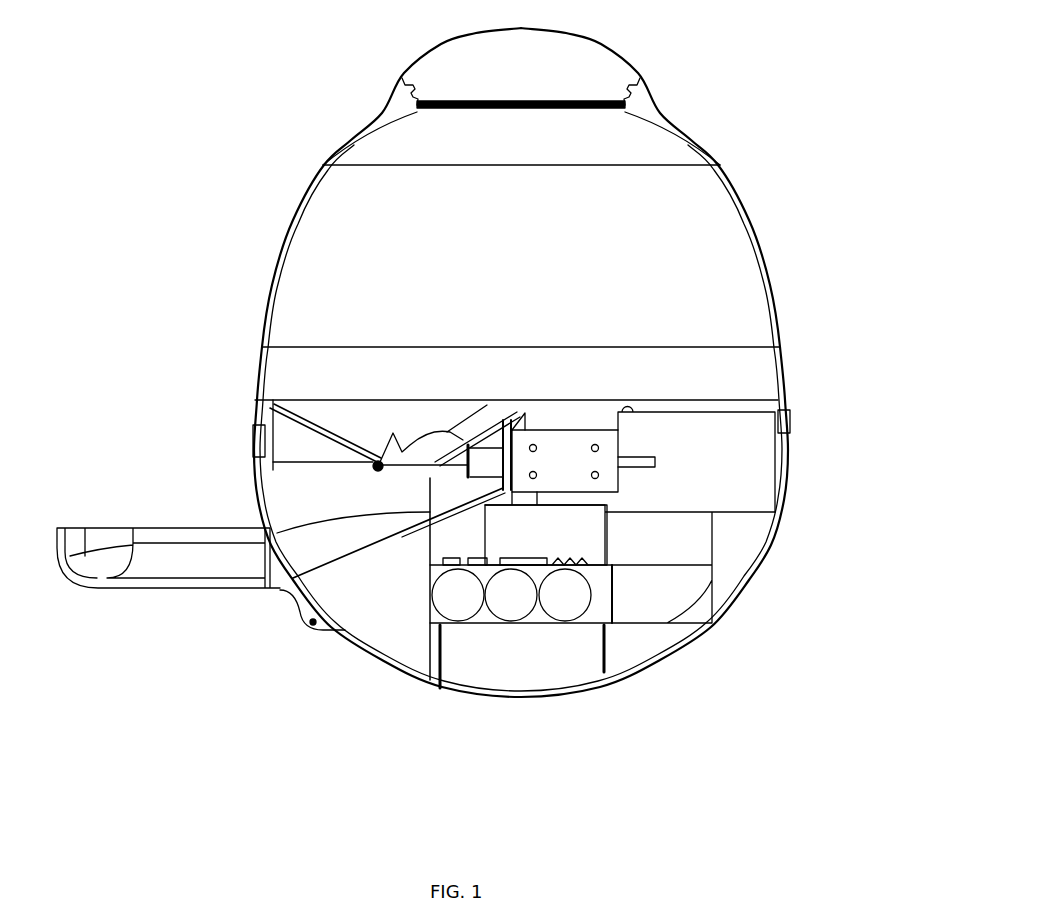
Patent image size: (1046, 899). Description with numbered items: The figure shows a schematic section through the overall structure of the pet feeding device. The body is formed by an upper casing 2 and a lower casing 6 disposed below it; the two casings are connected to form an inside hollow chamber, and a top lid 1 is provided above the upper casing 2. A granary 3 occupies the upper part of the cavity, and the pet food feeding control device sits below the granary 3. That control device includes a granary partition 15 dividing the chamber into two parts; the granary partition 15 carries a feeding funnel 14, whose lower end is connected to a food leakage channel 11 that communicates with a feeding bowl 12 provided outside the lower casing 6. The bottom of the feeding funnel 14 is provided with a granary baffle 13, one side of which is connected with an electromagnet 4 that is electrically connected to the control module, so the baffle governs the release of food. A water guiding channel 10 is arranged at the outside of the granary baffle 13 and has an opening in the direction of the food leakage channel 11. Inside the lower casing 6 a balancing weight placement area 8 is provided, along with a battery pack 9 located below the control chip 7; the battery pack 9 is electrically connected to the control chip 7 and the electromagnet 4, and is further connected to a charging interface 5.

The top lid 1 is at (592, 53).
The upper casing 2 is at (713, 148).
The granary 3 is at (587, 285).
The electromagnet 4 is at (607, 481).
The charging interface 5 is at (698, 625).
The lower casing 6 is at (657, 663).
The control chip 7 is at (585, 548).
The balancing weight placement area 8 is at (505, 645).
The battery pack 9 is at (458, 590).
The water guiding channel 10 is at (430, 510).
The food leakage channel 11 is at (307, 623).
The feeding bowl 12 is at (208, 568).
The granary baffle 13 is at (470, 475).
The feeding funnel 14 is at (373, 437).
The granary partition 15 is at (505, 378).